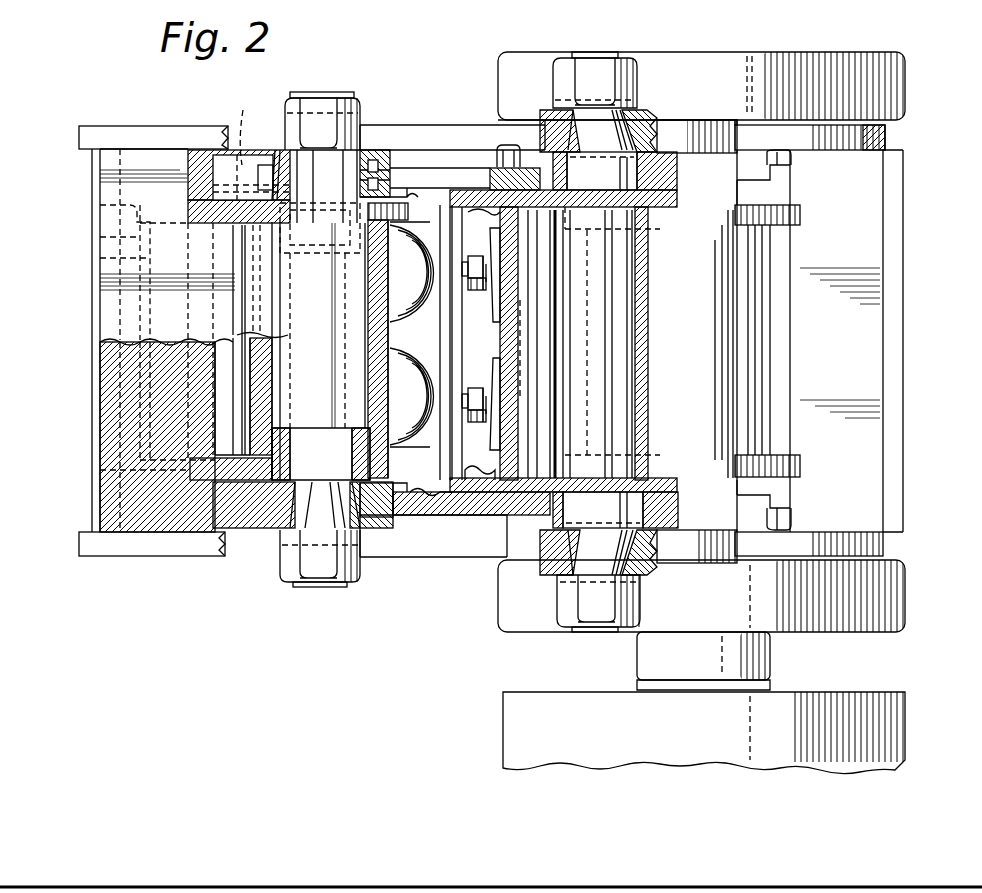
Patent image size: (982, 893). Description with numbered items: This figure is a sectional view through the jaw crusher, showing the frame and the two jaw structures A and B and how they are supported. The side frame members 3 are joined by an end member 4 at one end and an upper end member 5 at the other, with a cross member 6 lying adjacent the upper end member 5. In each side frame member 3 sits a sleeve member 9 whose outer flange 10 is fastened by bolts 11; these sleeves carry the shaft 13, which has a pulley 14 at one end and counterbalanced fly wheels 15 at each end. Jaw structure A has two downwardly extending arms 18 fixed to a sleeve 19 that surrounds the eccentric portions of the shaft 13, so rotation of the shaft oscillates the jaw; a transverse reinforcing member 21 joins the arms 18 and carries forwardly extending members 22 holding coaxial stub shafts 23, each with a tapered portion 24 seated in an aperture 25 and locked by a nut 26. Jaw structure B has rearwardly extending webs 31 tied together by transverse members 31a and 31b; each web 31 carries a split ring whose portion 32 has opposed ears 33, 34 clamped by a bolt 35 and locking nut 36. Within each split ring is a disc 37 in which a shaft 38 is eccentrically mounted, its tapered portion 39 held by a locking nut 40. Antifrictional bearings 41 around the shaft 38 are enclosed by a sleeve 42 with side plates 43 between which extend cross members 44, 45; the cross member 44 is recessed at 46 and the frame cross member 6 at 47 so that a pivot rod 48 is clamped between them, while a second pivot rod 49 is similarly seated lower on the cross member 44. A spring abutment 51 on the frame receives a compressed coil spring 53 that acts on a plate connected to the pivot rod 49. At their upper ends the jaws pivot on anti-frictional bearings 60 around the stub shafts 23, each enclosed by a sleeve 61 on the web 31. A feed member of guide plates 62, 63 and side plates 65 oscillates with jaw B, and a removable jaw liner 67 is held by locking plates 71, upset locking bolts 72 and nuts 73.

The side frame member 3 is at (168, 128).
The end member 4 is at (903, 300).
The upper end member 5 is at (92, 182).
The cross member 6 is at (136, 160).
The sleeve member 9 is at (778, 183).
The outer flange 10 is at (812, 124).
The bolt 11 is at (790, 158).
The shaft 13 is at (692, 680).
The pulley 14 is at (905, 714).
The counterbalanced fly wheel 15 is at (803, 64).
The downwardly extending arm 18 is at (801, 215).
The sleeve 19 is at (765, 358).
The transversely extending reinforcing member 21 is at (730, 330).
The forwardly extending member 22 is at (690, 138).
The stub shaft 23 is at (603, 340).
The tapered portion 24 is at (577, 130).
The aperture 25 is at (648, 128).
The nut 26 is at (565, 78).
The rearwardly extending web 31 is at (446, 170).
The transverse member 31a is at (482, 465).
The transverse member 31b is at (418, 493).
The split ring portion 32 is at (232, 162).
The ear 33 is at (277, 155).
The ear 34 is at (368, 158).
The bolt 35 is at (264, 168).
The locking nut 36 is at (378, 165).
The disc 37 is at (255, 590).
The shaft 38 is at (299, 325).
The tapered portion 39 is at (365, 512).
The locking nut 40 is at (345, 130).
The antifrictional bearing 41 is at (345, 234).
The sleeve 42 is at (400, 340).
The side plate 43 is at (203, 210).
The cross member 44 is at (140, 238).
The cross member 45 is at (130, 206).
The recess 46 is at (260, 352).
The recess 47 is at (210, 345).
The pivot rod 48 is at (228, 390).
The pivot rod 49 is at (100, 258).
The spring abutment 51 is at (455, 346).
The compressed coil spring 53 is at (420, 252).
The anti-frictional bearing 60 is at (667, 192).
The sleeve 61 is at (672, 170).
The feed guide plate 62 is at (506, 350).
The feed guide plate 63 is at (645, 282).
The side plate 65 is at (662, 210).
The jaw liner 67 is at (602, 320).
The locking plate 71 is at (490, 240).
The upset locking bolt 72 is at (474, 290).
The nut 73 is at (484, 258).
The jaw structure A is at (722, 132).
The jaw structure B is at (424, 152).